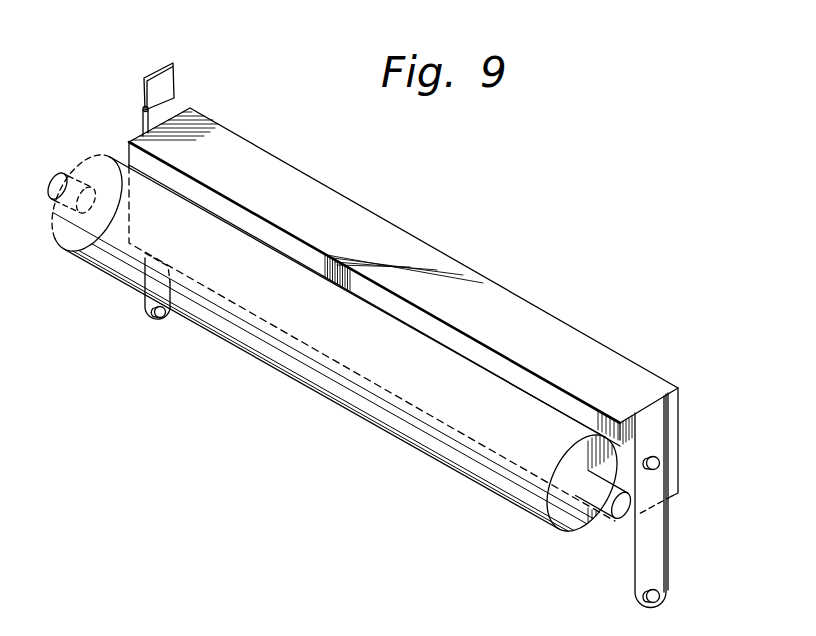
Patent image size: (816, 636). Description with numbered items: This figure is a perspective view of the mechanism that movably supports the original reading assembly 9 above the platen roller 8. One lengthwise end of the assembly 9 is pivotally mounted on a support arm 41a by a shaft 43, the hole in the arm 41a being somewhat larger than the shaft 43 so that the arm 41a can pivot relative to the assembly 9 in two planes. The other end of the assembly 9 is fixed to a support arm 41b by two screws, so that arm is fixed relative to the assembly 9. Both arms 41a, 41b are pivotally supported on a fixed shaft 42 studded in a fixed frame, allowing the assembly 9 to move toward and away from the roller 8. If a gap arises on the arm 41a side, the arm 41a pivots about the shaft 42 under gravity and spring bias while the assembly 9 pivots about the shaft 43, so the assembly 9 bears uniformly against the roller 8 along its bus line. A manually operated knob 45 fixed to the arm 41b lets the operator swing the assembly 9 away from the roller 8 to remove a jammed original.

The platen roller 8 is at (338, 388).
The original reading assembly 9 is at (507, 303).
The support arm 41a is at (645, 555).
The support arm 41b is at (143, 119).
The fixed shaft 42 is at (160, 318).
The shaft 43 is at (652, 455).
The manually operated lever or knob 45 is at (163, 83).